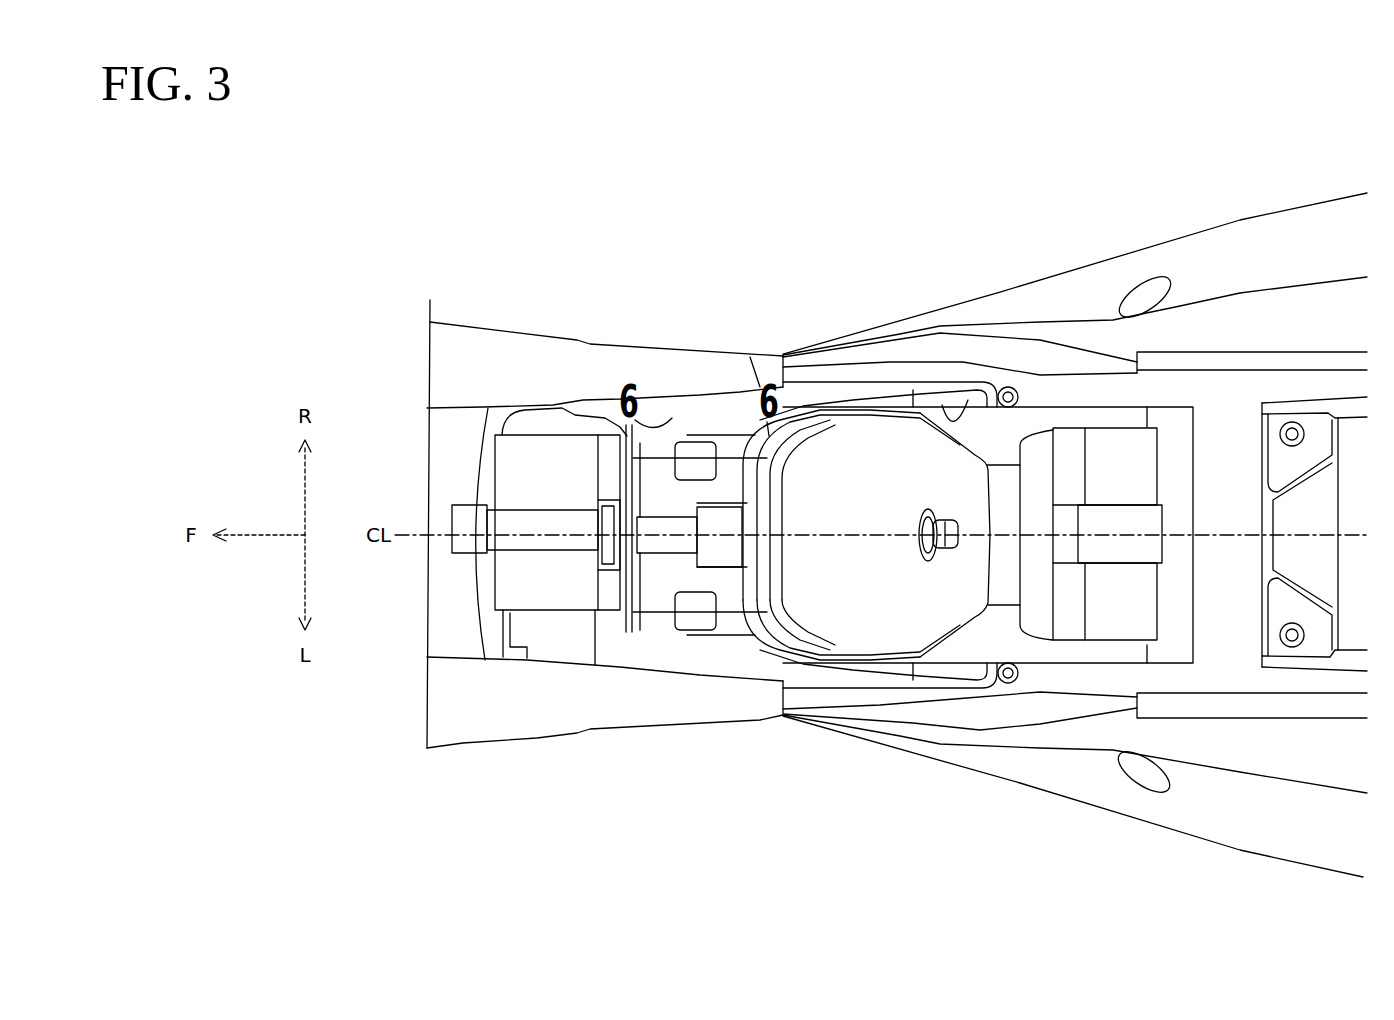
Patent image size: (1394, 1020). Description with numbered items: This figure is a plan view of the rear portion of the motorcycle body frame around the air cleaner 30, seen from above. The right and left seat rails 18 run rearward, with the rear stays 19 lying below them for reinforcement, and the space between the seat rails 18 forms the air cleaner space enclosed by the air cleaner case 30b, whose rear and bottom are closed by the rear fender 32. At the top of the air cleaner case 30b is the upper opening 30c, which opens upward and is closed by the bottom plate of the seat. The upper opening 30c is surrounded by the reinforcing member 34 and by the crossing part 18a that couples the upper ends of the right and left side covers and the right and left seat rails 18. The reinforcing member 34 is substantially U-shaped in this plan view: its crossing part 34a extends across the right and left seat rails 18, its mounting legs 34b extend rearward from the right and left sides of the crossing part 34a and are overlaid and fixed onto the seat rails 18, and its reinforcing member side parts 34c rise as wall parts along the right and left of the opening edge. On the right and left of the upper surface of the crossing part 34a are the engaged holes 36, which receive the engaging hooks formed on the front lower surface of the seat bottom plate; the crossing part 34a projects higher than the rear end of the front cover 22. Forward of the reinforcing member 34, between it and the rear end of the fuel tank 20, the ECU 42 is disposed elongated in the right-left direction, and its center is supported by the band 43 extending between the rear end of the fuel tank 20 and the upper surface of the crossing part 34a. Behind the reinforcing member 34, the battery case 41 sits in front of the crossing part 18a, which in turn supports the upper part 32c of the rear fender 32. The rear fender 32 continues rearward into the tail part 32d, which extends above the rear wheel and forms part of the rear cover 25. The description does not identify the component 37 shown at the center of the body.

The seat rails 18 is at (1057, 383).
The crossing part 18a is at (1220, 410).
The rear stays 19 is at (845, 352).
The fuel tank 20 is at (428, 633).
The front cover 22 is at (474, 346).
The rear cover 25 is at (1100, 258).
The air cleaner 30 is at (1010, 420).
The air cleaner case 30b is at (719, 388).
The upper opening 30c is at (953, 405).
The rear fender 32 is at (998, 612).
The upper part of the rear fender 32c is at (1115, 648).
The tail part 32d is at (1305, 410).
The reinforcing member 34 is at (625, 632).
The crossing part 34a is at (740, 662).
The mounting legs 34b is at (913, 388).
The reinforcing member side parts 34c is at (757, 353).
The engaged holes 36 is at (678, 440).
The housing body 37 is at (879, 445).
The battery case 41 is at (1043, 640).
The ECU 42 is at (505, 472).
The band 43 is at (520, 548).